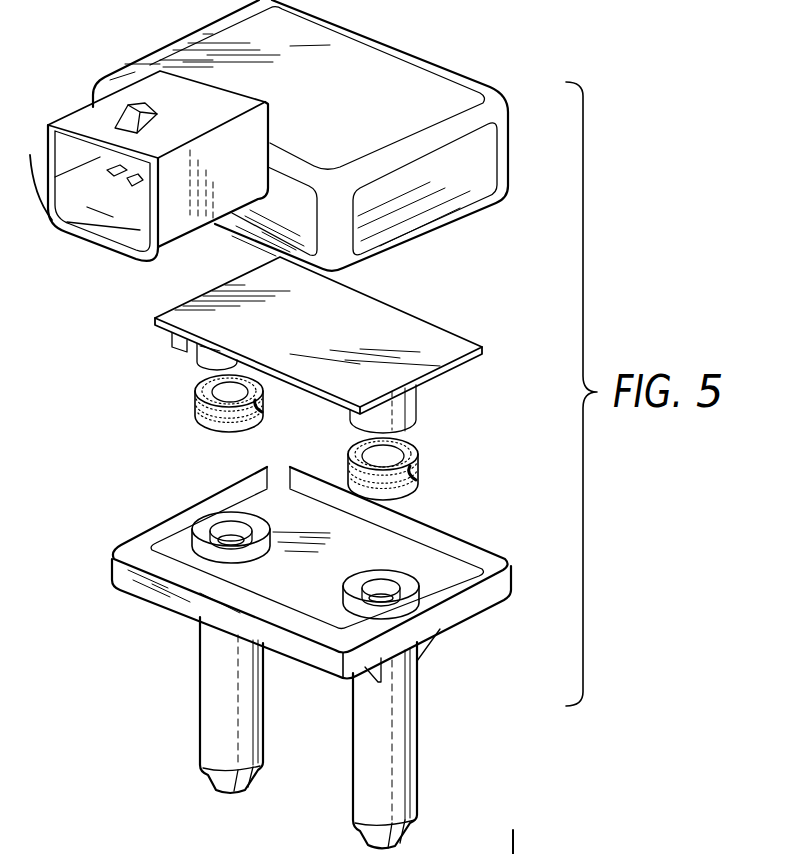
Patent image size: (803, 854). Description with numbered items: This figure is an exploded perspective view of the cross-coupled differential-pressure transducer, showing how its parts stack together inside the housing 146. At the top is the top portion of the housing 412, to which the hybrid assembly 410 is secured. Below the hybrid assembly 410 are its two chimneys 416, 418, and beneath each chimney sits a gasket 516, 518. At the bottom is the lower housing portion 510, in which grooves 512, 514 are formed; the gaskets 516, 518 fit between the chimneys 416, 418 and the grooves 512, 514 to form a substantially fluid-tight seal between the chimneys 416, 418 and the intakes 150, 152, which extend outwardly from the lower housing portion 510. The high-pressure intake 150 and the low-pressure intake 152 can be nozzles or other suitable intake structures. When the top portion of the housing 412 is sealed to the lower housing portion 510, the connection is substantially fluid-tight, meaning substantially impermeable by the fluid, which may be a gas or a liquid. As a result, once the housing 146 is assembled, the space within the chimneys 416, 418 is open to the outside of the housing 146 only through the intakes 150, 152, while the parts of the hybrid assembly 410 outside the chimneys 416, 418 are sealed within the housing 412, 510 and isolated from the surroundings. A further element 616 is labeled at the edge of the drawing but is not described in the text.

The housing 146 is at (430, 86).
The housing side opening 412 is at (462, 197).
The circuit board 410 is at (465, 323).
The standoff 418 is at (207, 361).
The washer 518 is at (196, 410).
The standoff 416 is at (415, 404).
The washer 516 is at (418, 470).
The boss 514 is at (206, 532).
The base tray 510 is at (137, 577).
The boss 512 is at (408, 599).
The leg 152 is at (207, 735).
The leg 150 is at (407, 793).
The connector 616 is at (545, 842).